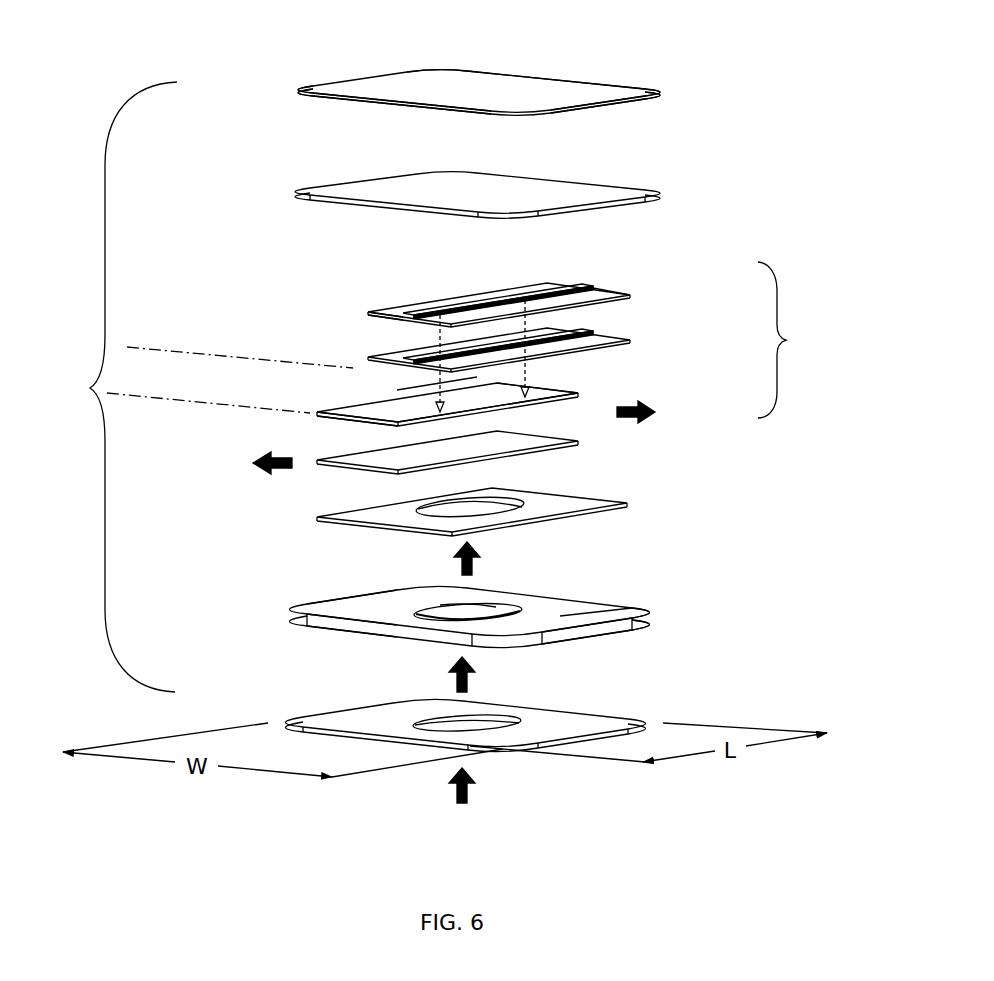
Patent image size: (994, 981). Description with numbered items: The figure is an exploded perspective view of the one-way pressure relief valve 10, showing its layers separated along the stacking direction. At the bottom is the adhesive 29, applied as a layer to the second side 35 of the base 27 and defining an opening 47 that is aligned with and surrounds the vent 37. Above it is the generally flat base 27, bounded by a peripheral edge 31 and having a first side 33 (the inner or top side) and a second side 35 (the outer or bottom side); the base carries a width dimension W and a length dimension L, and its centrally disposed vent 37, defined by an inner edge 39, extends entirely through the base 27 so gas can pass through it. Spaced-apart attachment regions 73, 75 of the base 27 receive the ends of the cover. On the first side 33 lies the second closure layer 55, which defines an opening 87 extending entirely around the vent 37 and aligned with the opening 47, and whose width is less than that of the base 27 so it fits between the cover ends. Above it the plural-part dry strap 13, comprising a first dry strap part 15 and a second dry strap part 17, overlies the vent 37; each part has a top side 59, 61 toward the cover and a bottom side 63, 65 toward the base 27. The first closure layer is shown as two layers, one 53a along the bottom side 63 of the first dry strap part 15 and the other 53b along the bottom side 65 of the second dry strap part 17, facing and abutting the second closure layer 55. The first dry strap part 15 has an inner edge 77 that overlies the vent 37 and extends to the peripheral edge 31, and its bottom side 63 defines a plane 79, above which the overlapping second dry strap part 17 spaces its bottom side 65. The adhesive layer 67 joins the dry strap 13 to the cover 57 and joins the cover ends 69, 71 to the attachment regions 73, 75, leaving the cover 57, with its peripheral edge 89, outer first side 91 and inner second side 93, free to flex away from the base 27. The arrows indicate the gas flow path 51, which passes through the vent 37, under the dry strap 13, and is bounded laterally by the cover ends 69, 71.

The one-way pressure relief valve 10 is at (80, 390).
The plural-part dry strap 13 is at (788, 340).
The first dry strap part 15 is at (398, 405).
The second dry strap part 17 is at (545, 287).
The base 27 is at (322, 628).
The adhesive 29 is at (444, 741).
The peripheral edge 31 is at (667, 623).
The first side 33 is at (476, 613).
The second side 35 is at (608, 638).
The vent 37 is at (484, 609).
The inner edge 39 is at (493, 612).
The opening 47 is at (469, 728).
The gas flow path 51 is at (446, 558).
The first closure layer 53a is at (523, 442).
The first closure layer 53b is at (580, 345).
The second closure layer 55 is at (496, 510).
The cover 57 is at (347, 90).
The first side 59 is at (423, 402).
The first side 61 is at (512, 289).
The second side 63 is at (360, 420).
The second side 65 is at (382, 323).
The adhesive layer 67 is at (512, 190).
The end 69 is at (288, 98).
The end 71 is at (595, 108).
The attachment region 73 is at (327, 612).
The attachment region 75 is at (615, 612).
The inner edge 77 is at (537, 402).
The plane 79 is at (207, 378).
The opening 87 is at (417, 498).
The peripheral edge 89 is at (392, 107).
The first side 91 is at (410, 92).
The second side 93 is at (653, 103).